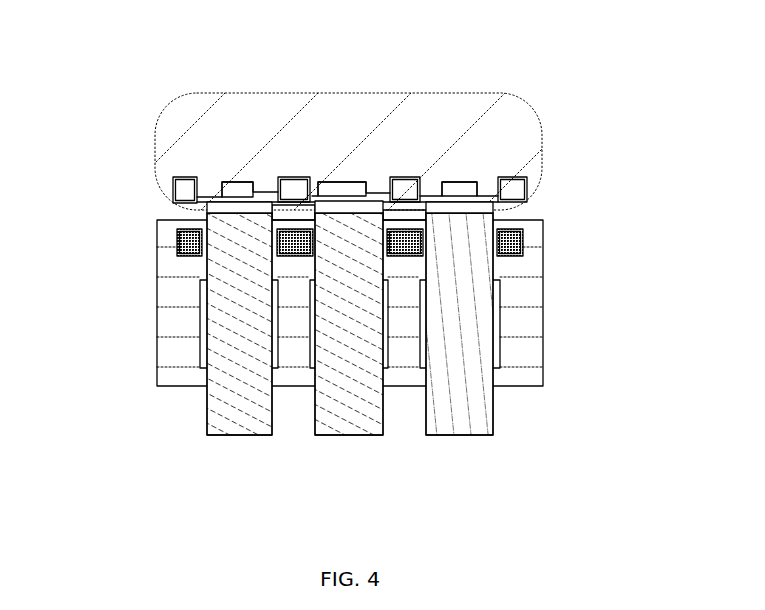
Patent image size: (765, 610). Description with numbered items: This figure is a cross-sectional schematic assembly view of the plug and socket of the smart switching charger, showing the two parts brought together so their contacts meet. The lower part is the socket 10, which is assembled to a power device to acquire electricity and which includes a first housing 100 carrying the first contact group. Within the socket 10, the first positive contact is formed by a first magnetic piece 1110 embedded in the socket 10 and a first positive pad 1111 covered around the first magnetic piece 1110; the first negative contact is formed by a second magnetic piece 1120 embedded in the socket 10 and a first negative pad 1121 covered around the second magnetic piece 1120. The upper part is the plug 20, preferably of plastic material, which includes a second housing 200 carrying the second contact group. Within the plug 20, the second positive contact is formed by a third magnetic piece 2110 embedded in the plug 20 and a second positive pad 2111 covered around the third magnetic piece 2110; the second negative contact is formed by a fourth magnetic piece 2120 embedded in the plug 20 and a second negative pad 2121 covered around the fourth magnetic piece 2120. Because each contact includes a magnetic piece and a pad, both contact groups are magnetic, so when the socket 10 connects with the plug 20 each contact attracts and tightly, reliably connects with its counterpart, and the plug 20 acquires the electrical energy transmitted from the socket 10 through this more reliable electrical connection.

The socket 10 is at (346, 360).
The first housing 100 is at (183, 330).
The first magnetic piece 1110 is at (405, 236).
The first positive pad 1111 is at (342, 420).
The second magnetic piece 1120 is at (188, 250).
The first negative pad 1121 is at (220, 387).
The plug 20 is at (382, 115).
The second housing 200 is at (535, 137).
The third magnetic piece 2110 is at (405, 195).
The second positive pad 2111 is at (353, 195).
The fourth magnetic piece 2120 is at (183, 185).
The second negative pad 2121 is at (247, 193).